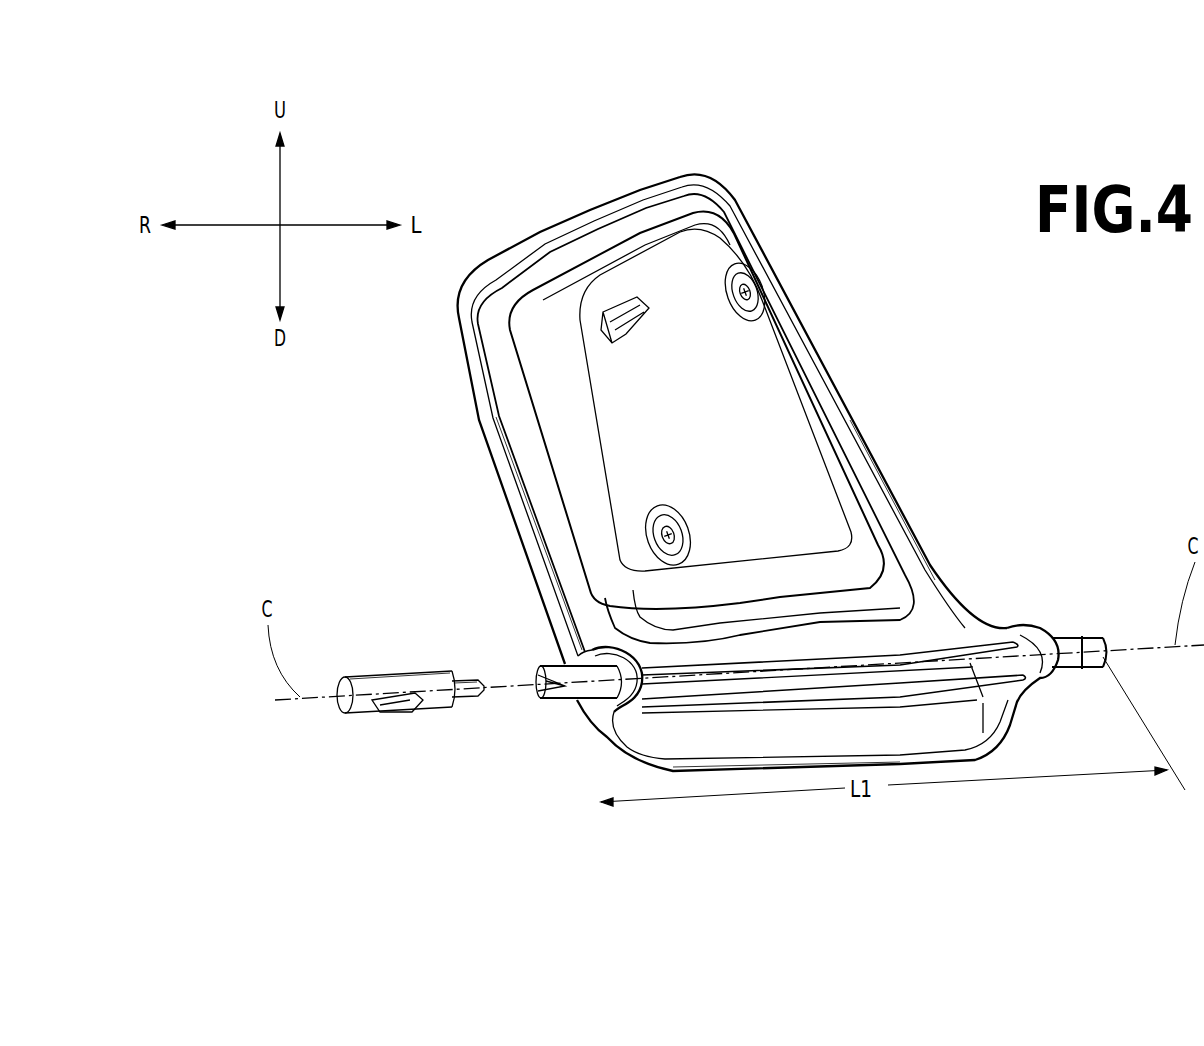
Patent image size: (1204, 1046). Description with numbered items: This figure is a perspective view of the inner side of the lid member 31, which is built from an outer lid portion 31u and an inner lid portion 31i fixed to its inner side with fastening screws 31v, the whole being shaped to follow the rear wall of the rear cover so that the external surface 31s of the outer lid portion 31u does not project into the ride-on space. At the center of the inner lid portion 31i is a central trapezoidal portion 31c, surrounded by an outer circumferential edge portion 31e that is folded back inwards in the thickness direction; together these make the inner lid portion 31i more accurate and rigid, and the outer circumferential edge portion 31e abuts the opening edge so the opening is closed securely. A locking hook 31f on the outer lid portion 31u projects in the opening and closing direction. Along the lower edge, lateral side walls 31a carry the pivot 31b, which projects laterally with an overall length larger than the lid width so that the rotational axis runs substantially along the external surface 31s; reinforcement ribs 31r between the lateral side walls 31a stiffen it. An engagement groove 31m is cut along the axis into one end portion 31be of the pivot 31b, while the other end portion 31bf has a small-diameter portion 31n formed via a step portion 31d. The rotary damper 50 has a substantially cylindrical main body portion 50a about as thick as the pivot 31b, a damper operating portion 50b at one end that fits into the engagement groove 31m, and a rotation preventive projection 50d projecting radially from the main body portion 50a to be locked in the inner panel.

The lid member 31 is at (762, 215).
The lateral side walls 31a is at (664, 765).
The pivot 31b is at (575, 712).
The one end portion 31be is at (531, 701).
The other end portion 31bf is at (1106, 660).
The central trapezoidal portion 31c is at (617, 413).
The step portion 31d is at (1084, 636).
The outer circumferential edge portion 31e is at (497, 338).
The locking hook 31f is at (650, 332).
The inner lid portion 31i is at (790, 414).
The engagement groove 31m is at (527, 665).
The small-diameter portion 31n is at (1108, 638).
The reinforcement ribs 31r is at (918, 700).
The external surface 31s is at (738, 745).
The outer lid portion 31u is at (950, 597).
The fastening screws 31v is at (748, 283).
The rotary damper 50 is at (445, 735).
The main body portion 50a is at (375, 675).
The damper operating portion 50b is at (456, 675).
The rotation preventive projection 50d is at (405, 714).